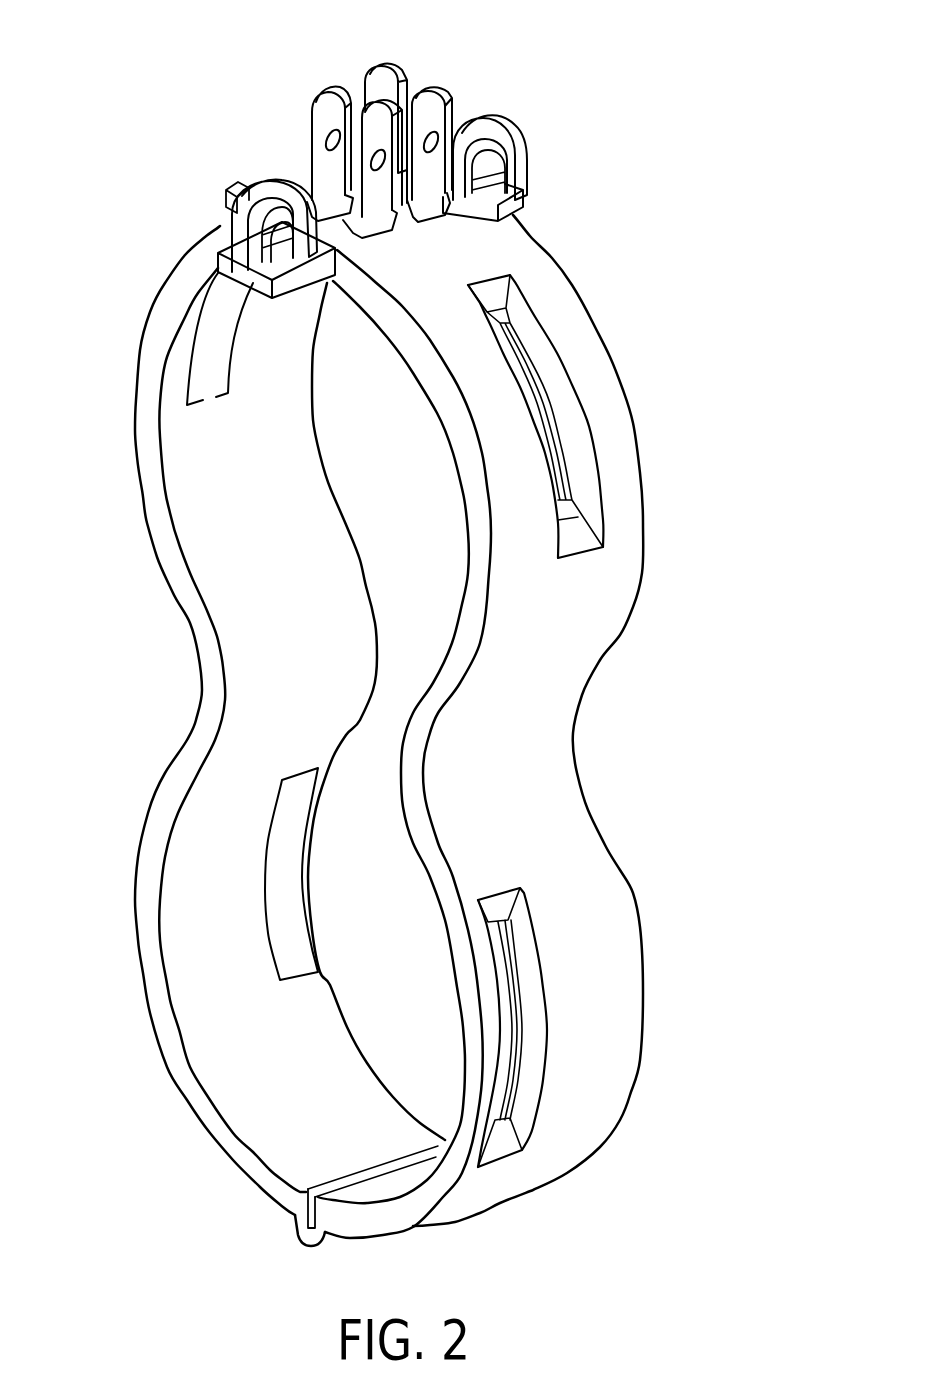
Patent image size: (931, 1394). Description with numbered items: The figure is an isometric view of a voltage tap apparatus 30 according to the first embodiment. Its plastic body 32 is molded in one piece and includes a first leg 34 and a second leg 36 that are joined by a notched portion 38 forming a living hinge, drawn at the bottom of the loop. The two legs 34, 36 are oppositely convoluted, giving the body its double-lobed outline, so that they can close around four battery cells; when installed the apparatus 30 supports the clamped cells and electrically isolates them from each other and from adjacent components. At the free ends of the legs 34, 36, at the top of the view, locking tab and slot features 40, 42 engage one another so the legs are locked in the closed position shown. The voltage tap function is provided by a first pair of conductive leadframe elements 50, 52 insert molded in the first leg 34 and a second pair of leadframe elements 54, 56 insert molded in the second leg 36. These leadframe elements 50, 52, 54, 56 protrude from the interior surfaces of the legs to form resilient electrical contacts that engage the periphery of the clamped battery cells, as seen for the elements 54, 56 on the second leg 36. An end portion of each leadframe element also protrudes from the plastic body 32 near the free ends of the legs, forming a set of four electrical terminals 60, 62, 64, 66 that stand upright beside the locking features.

The voltage tap apparatus 30 is at (672, 229).
The plastic body 32 is at (605, 812).
The first leg 34 is at (608, 945).
The second leg 36 is at (180, 975).
The notched portion 38 is at (300, 1210).
The locking tab 40 is at (235, 182).
The slot 42 is at (233, 225).
The leadframe element 50 is at (547, 427).
The leadframe element 52 is at (508, 1010).
The leadframe element 54 is at (207, 395).
The leadframe element 56 is at (292, 878).
The electrical terminal 60 is at (433, 90).
The electrical terminal 62 is at (327, 85).
The electrical terminal 64 is at (355, 116).
The electrical terminal 66 is at (377, 68).